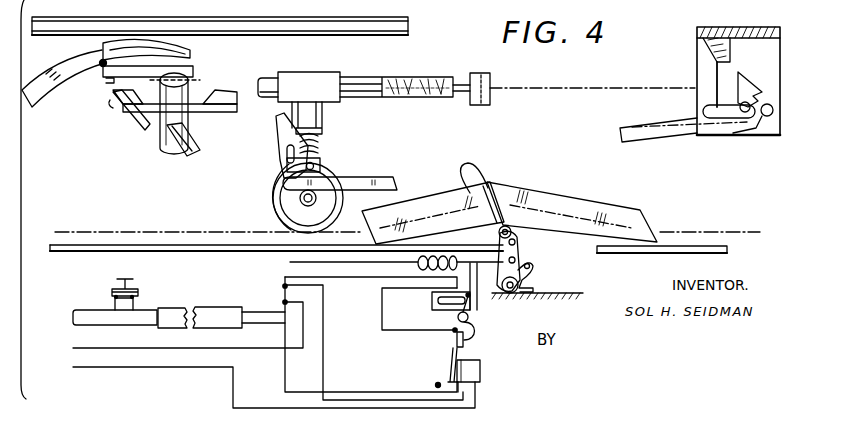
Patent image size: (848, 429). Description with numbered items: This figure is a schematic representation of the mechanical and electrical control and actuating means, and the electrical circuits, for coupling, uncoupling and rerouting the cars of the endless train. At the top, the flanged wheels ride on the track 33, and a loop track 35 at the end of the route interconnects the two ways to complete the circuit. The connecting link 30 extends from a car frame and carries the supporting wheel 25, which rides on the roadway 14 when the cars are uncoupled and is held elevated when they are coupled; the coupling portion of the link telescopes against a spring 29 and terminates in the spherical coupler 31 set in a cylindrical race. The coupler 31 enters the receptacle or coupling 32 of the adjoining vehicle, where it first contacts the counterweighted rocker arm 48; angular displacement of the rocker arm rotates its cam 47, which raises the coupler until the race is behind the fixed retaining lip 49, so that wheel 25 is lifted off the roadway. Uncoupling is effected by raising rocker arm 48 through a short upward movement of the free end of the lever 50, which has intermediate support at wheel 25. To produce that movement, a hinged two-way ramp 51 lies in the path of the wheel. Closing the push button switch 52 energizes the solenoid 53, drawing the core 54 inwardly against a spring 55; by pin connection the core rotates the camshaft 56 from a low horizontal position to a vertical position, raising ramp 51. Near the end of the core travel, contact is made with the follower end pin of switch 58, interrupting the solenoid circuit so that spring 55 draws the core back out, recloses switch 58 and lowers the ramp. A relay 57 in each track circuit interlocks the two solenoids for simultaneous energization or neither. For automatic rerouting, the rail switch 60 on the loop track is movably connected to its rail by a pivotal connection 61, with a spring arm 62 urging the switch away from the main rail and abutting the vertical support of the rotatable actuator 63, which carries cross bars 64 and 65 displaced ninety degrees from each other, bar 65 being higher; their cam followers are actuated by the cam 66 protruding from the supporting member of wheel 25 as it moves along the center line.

The roadway 14 is at (177, 233).
The wheel 25 is at (272, 204).
The spring 29 is at (446, 76).
The connecting link 30 is at (348, 100).
The terminal coupler 31 is at (492, 97).
The coupling 32 is at (716, 70).
The track 33 is at (410, 30).
The loop track 35 is at (64, 62).
The cam 47 is at (702, 109).
The rocker arm 48 is at (752, 89).
The retaining lip 49 is at (700, 47).
The lever 50 is at (388, 174).
The hinged two-way ramp 51 is at (610, 182).
The switch 52 is at (130, 278).
The solenoid 53 is at (428, 271).
The core 54 is at (412, 262).
The spring 55 is at (528, 278).
The camshaft 56 is at (520, 252).
The relay 57 is at (482, 372).
The switch 58 is at (476, 333).
The rail switch 60 is at (188, 56).
The pivotal connection 61 is at (101, 66).
The arm 62 is at (113, 79).
The rotatable actuator 63 is at (190, 88).
The cross bar 64 is at (185, 148).
The cross bar 65 is at (210, 110).
The cam 66 is at (280, 140).